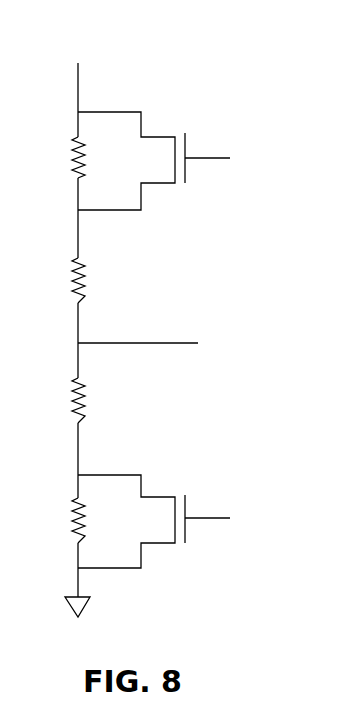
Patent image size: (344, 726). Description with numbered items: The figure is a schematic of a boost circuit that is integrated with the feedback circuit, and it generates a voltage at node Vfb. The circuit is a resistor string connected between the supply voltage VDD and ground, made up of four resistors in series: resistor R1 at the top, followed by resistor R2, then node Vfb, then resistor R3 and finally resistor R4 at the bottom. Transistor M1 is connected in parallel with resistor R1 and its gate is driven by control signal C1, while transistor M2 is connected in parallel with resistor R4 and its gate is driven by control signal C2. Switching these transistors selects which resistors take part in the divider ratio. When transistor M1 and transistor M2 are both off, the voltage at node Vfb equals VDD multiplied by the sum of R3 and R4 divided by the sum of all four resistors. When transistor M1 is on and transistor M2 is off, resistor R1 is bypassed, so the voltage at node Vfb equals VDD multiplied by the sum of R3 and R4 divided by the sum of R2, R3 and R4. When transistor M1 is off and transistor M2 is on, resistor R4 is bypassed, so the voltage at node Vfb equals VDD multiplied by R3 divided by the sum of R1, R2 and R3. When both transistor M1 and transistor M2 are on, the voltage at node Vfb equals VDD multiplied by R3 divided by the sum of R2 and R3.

The supply voltage VDD is at (76, 74).
The resistor R1 is at (61, 157).
The resistor R2 is at (61, 280).
The resistor R3 is at (61, 400).
The resistor R4 is at (61, 520).
The transistor M1 is at (131, 161).
The transistor M2 is at (131, 521).
The first control signal C1 is at (211, 145).
The second control signal C2 is at (210, 505).
The node Vfb is at (138, 327).